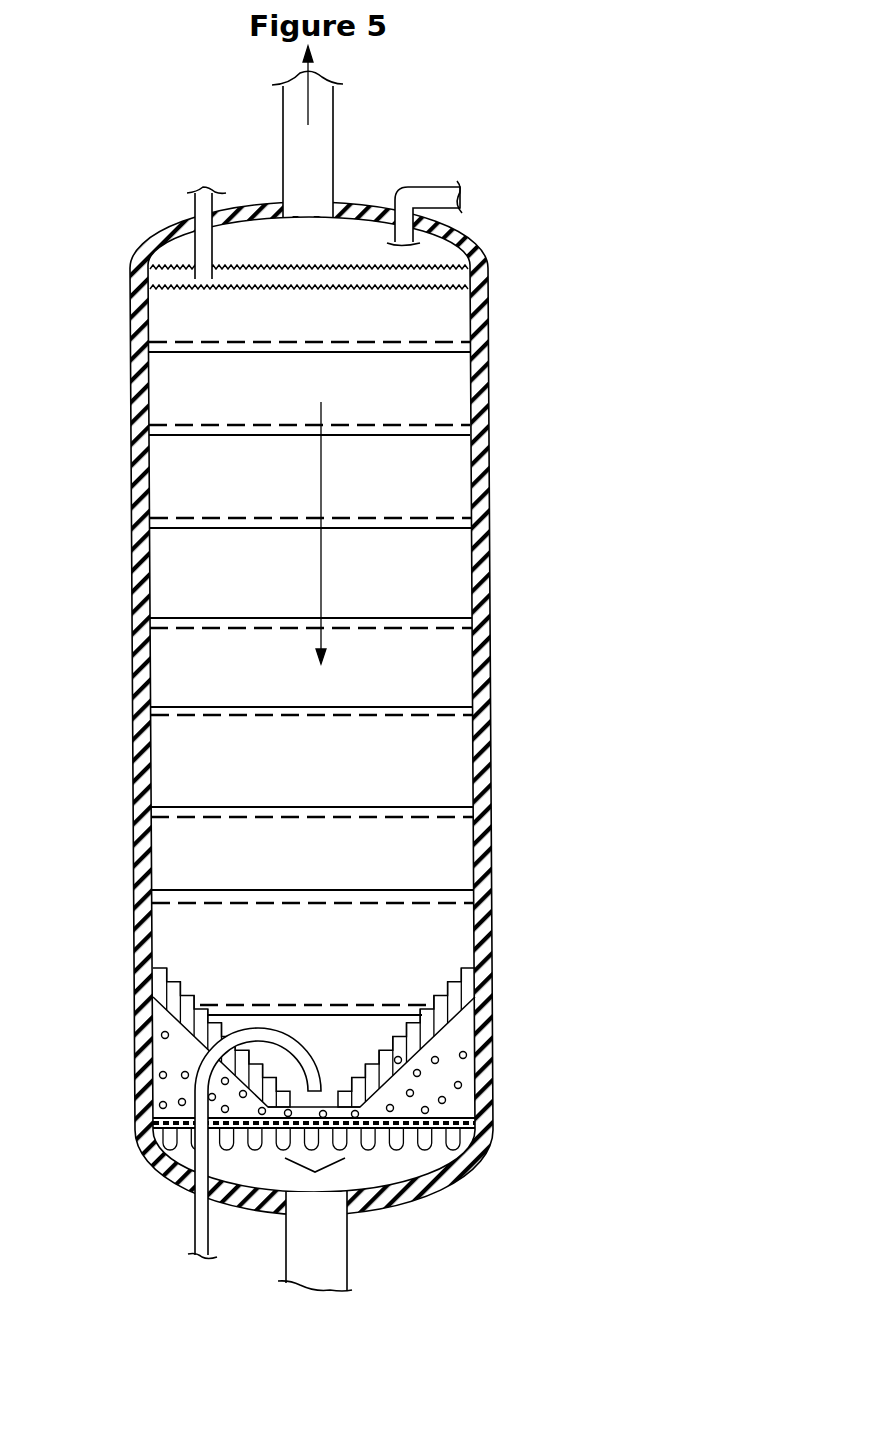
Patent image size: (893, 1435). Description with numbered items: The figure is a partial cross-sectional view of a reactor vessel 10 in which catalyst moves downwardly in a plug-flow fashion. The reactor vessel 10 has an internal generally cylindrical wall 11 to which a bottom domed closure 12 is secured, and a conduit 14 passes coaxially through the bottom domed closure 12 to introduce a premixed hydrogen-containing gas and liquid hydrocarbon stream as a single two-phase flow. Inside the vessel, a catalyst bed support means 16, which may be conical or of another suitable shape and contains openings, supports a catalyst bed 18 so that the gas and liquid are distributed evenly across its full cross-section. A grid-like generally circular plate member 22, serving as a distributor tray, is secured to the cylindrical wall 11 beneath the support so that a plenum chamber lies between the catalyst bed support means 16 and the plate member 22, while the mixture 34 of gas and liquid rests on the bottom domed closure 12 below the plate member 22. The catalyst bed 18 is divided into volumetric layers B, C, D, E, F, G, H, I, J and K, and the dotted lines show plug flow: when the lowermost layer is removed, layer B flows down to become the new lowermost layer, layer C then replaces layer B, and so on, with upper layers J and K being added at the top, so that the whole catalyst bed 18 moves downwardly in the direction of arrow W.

The reactor vessel 10 is at (495, 612).
The internal generally cylindrical wall 11 is at (153, 855).
The bottom domed closure 12 is at (430, 1195).
The conduit 14 is at (347, 1262).
The catalyst bed support means 16 is at (194, 1037).
The catalyst bed 18 is at (328, 775).
The generally circular plate member 22 is at (472, 1117).
The mixture 34 is at (158, 1095).
The arrow W is at (322, 558).
The upper volumetric layer K is at (457, 295).
The upper volumetric layer J is at (457, 330).
The volumetric layer I is at (457, 407).
The volumetric layer H is at (457, 498).
The volumetric layer G is at (458, 568).
The volumetric layer F is at (458, 655).
The volumetric layer E is at (458, 677).
The volumetric layer D is at (458, 860).
The volumetric layer C is at (458, 937).
The volumetric layer B is at (360, 1045).